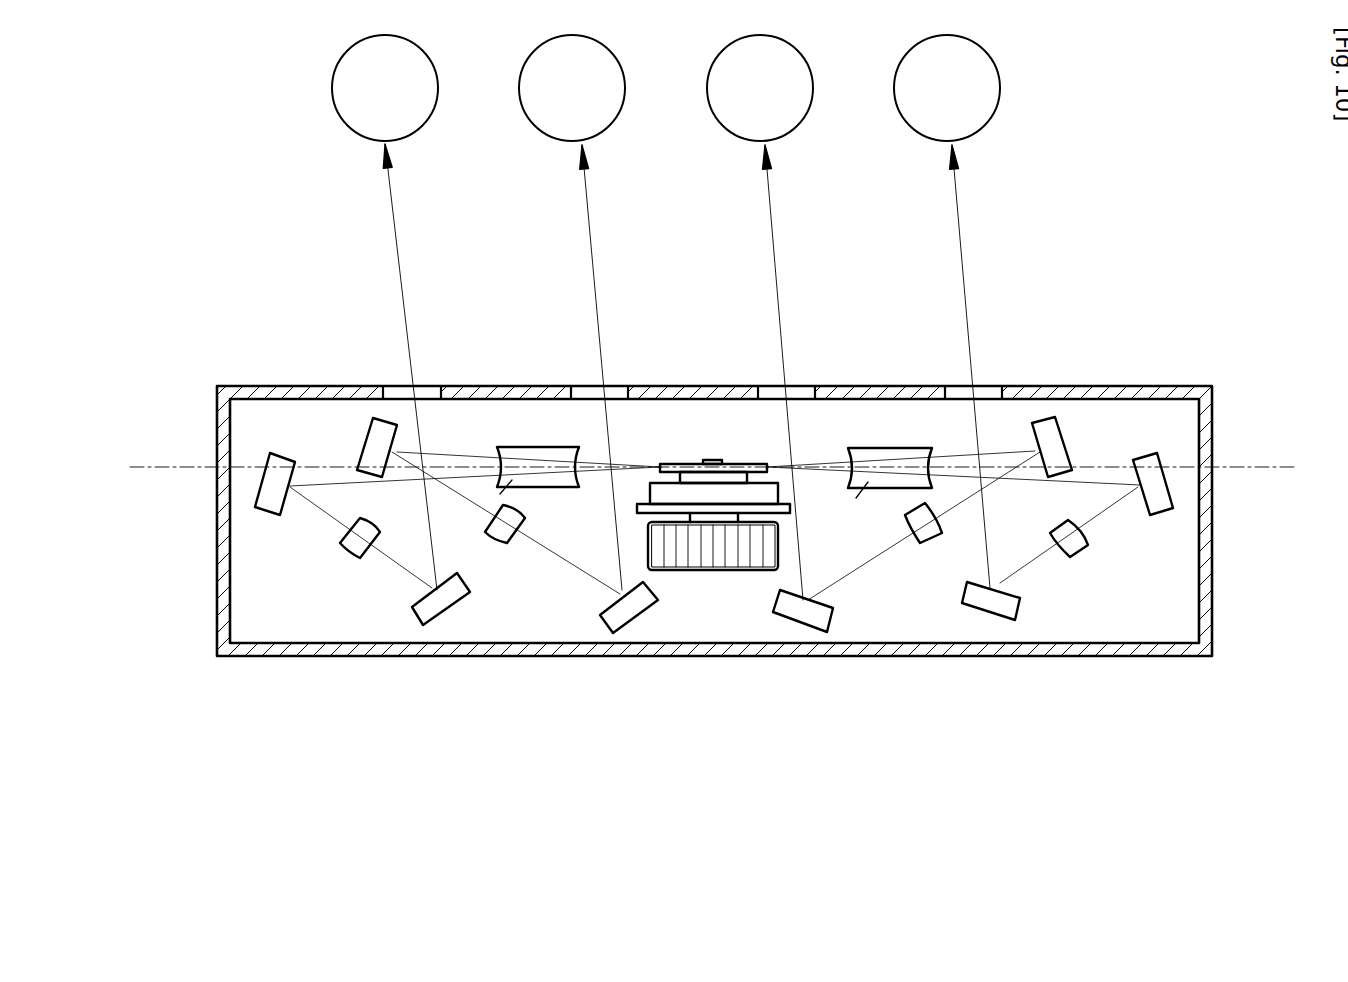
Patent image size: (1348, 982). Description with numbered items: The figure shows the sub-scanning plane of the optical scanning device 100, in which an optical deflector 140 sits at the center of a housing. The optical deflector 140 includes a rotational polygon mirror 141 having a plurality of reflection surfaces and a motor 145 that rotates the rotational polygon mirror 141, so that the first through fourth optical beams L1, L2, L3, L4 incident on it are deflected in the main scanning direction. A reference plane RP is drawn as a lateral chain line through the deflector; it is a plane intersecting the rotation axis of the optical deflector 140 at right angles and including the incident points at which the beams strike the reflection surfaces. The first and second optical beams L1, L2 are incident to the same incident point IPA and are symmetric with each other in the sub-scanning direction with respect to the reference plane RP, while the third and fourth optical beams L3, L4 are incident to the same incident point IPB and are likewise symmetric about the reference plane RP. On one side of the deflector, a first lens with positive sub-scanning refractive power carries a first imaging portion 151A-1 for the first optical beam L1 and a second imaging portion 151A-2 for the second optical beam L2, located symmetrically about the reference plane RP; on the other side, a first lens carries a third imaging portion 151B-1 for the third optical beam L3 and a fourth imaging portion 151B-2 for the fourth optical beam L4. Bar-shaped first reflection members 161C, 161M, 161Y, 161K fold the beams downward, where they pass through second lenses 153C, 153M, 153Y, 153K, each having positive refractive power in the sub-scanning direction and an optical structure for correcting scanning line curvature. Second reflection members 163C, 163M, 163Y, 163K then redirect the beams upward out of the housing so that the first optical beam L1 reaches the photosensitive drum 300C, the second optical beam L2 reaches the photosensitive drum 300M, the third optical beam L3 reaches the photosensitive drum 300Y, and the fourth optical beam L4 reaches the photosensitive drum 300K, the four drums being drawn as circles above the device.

The optical scanning device 100 is at (1213, 352).
The optical deflector 140 is at (713, 534).
The rotational polygon mirror 141 is at (697, 464).
The motor 145 is at (690, 560).
The first imaging portion 151A-1 is at (901, 447).
The second imaging portion 151A-2 is at (856, 498).
The third imaging portion 151B-1 is at (549, 446).
The fourth imaging portion 151B-2 is at (500, 494).
The second lens 153K is at (350, 545).
The second lens 153Y is at (507, 545).
The second lens 153M is at (923, 545).
The second lens 153C is at (1073, 557).
The first reflection member 161K is at (266, 488).
The first reflection member 161Y is at (378, 427).
The first reflection member 161M is at (1050, 426).
The first reflection member 161C is at (1160, 488).
The second reflection member 163K is at (437, 606).
The second reflection member 163Y is at (614, 622).
The second reflection member 163M is at (812, 618).
The second reflection member 163C is at (1002, 615).
The photosensitive drum 300K is at (416, 118).
The photosensitive drum 300Y is at (607, 118).
The photosensitive drum 300M is at (795, 118).
The photosensitive drum 300C is at (985, 118).
The first optical beam L1 is at (961, 260).
The second optical beam L2 is at (774, 260).
The third optical beam L3 is at (588, 252).
The fourth optical beam L4 is at (393, 241).
The incident point IPA is at (660, 465).
The incident point IPB is at (767, 464).
The reference plane RP is at (138, 466).